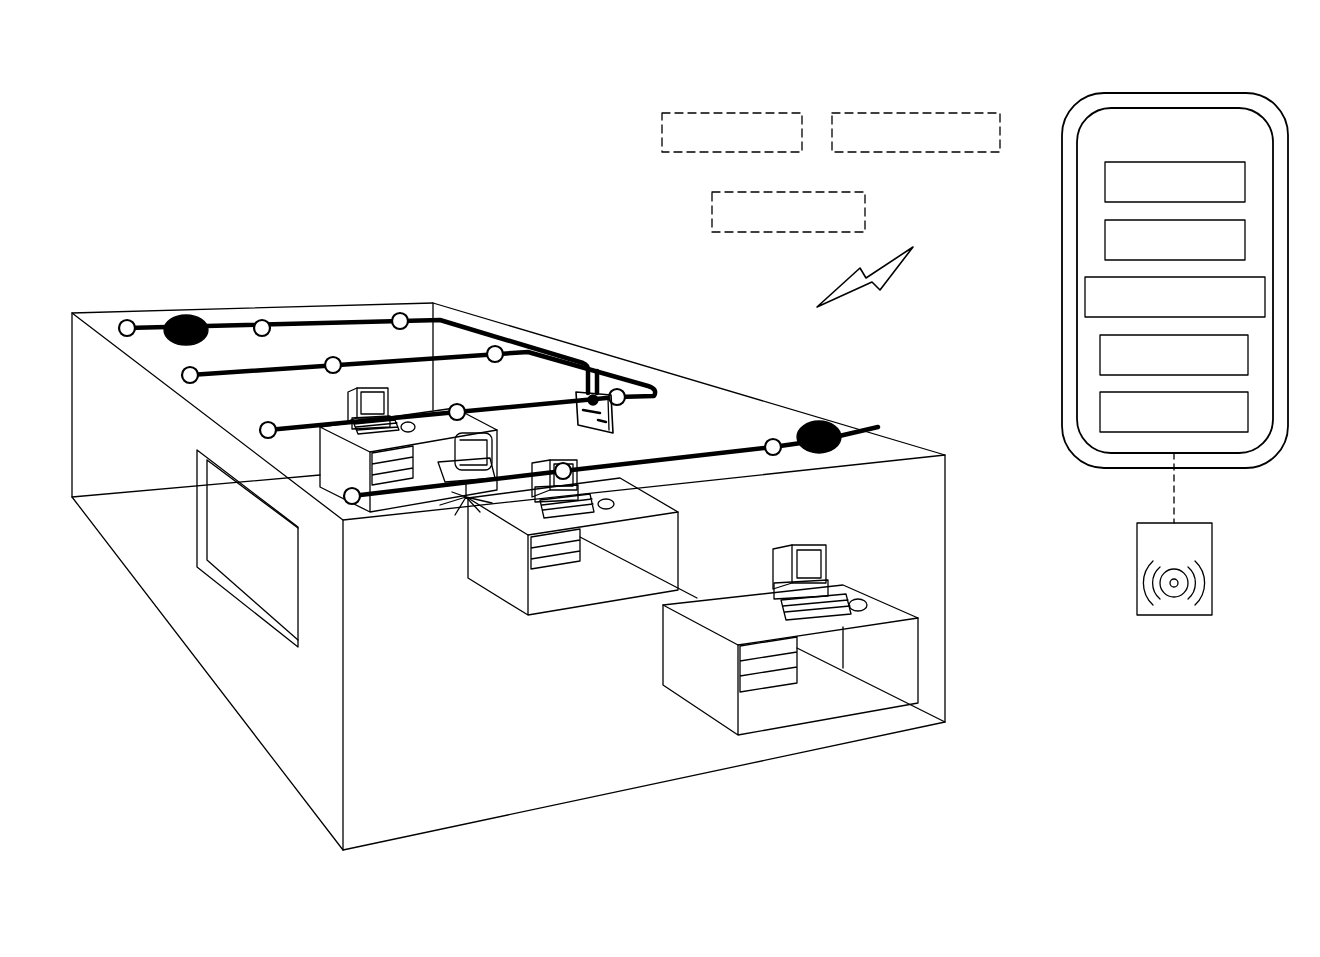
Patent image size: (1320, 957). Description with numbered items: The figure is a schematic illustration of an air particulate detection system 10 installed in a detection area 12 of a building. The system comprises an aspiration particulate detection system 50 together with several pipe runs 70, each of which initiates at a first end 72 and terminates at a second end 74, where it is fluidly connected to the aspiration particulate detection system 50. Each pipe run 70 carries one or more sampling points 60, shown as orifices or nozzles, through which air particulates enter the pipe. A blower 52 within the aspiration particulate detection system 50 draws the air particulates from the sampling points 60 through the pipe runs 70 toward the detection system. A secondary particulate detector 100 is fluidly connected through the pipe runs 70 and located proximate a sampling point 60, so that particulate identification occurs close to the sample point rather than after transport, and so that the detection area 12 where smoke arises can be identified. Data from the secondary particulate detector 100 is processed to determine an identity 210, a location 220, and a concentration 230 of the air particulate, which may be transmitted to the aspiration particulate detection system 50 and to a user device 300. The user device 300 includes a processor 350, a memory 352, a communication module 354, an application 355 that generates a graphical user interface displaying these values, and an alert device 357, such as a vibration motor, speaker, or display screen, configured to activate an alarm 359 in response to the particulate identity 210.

The air particulate detection system 10 is at (122, 130).
The detection area 12 is at (343, 673).
The aspiration particulate detection system 50 is at (622, 414).
The blower 52 is at (612, 420).
The sampling points 60 is at (775, 438).
The pipe runs 70 is at (362, 362).
The first end 72 is at (278, 427).
The second end 74 is at (590, 392).
The secondary particulate detector 100 is at (186, 316).
The identity 210 is at (715, 210).
The location 220 is at (664, 130).
The concentration 230 is at (918, 113).
The user device 300 is at (1247, 468).
The processor 350 is at (1105, 238).
The memory 352 is at (1105, 180).
The communication module 354 is at (1085, 295).
The application 355 is at (1100, 353).
The alert device 357 is at (1100, 410).
The alarm 359 is at (1148, 523).